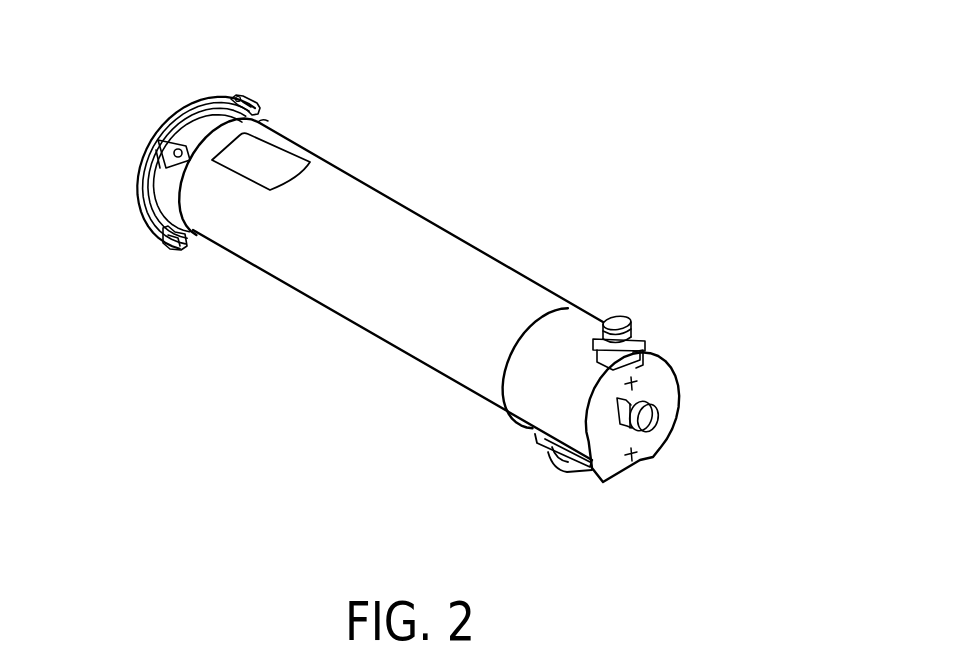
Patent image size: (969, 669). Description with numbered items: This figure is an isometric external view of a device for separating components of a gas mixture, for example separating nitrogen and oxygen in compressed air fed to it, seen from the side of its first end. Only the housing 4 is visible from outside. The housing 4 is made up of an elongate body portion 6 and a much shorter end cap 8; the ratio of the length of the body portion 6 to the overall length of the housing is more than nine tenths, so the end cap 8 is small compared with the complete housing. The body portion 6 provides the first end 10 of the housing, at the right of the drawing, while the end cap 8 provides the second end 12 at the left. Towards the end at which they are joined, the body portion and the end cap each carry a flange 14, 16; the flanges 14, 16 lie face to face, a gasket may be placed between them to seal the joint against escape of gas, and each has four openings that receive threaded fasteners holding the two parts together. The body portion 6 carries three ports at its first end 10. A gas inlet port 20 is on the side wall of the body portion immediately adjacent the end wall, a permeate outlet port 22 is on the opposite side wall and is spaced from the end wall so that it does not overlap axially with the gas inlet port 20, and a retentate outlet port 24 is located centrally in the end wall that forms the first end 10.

The housing 4 is at (381, 273).
The body portion 6 is at (486, 268).
The end cap 8 is at (179, 103).
The first end 10 is at (685, 370).
The second end 12 is at (140, 205).
The flange 14 is at (266, 122).
The flange 16 is at (252, 100).
The gas inlet port 20 is at (640, 316).
The permeate outlet port 22 is at (567, 473).
The retentate outlet port 24 is at (660, 422).